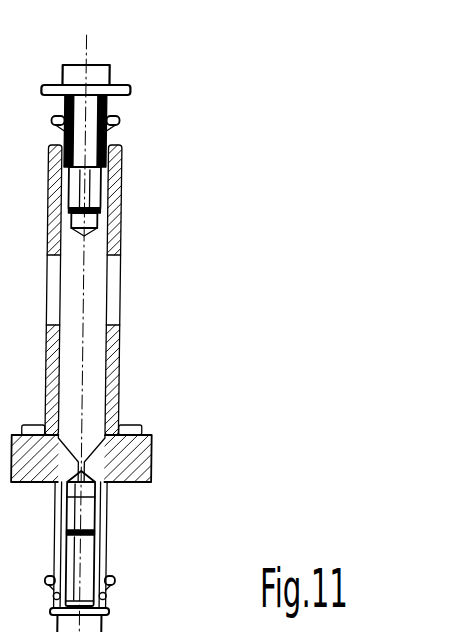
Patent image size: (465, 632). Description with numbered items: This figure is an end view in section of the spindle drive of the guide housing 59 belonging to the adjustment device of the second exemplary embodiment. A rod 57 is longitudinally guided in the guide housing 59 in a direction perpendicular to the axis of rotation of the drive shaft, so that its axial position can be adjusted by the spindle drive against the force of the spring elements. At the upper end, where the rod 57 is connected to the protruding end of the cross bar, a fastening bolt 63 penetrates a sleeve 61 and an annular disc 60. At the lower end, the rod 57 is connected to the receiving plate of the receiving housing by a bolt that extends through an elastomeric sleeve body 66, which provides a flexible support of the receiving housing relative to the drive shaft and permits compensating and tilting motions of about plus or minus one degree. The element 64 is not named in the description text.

The rod 57 is at (104, 482).
The guide housing 59 is at (120, 358).
The annular disc 60 is at (135, 83).
The sleeve 61 is at (112, 103).
The fastening bolt 63 is at (90, 142).
The lower piston 64 is at (82, 553).
The elastomeric sleeve body 66 is at (105, 594).